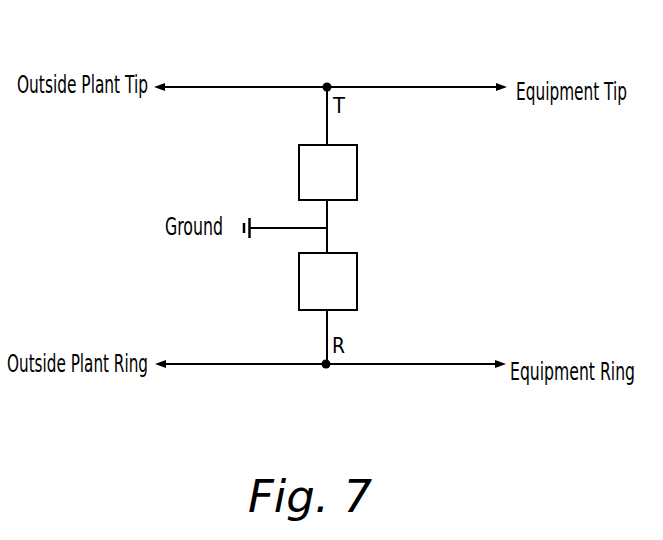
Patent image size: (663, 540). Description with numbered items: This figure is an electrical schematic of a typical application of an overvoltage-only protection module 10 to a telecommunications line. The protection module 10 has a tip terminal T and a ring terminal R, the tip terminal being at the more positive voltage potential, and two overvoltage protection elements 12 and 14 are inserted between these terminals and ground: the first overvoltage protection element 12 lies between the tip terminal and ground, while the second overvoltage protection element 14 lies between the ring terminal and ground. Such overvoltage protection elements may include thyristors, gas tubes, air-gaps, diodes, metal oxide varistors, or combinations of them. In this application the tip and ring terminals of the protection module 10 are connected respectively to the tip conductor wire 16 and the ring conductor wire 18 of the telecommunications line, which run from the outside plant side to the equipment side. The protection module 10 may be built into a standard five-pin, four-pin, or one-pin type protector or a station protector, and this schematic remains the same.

The overvoltage only protection module 10 is at (352, 182).
The overvoltage protection element 12 is at (357, 162).
The overvoltage protection element 14 is at (357, 273).
The tip conductor wire 16 is at (230, 86).
The ring conductor wire 18 is at (220, 367).